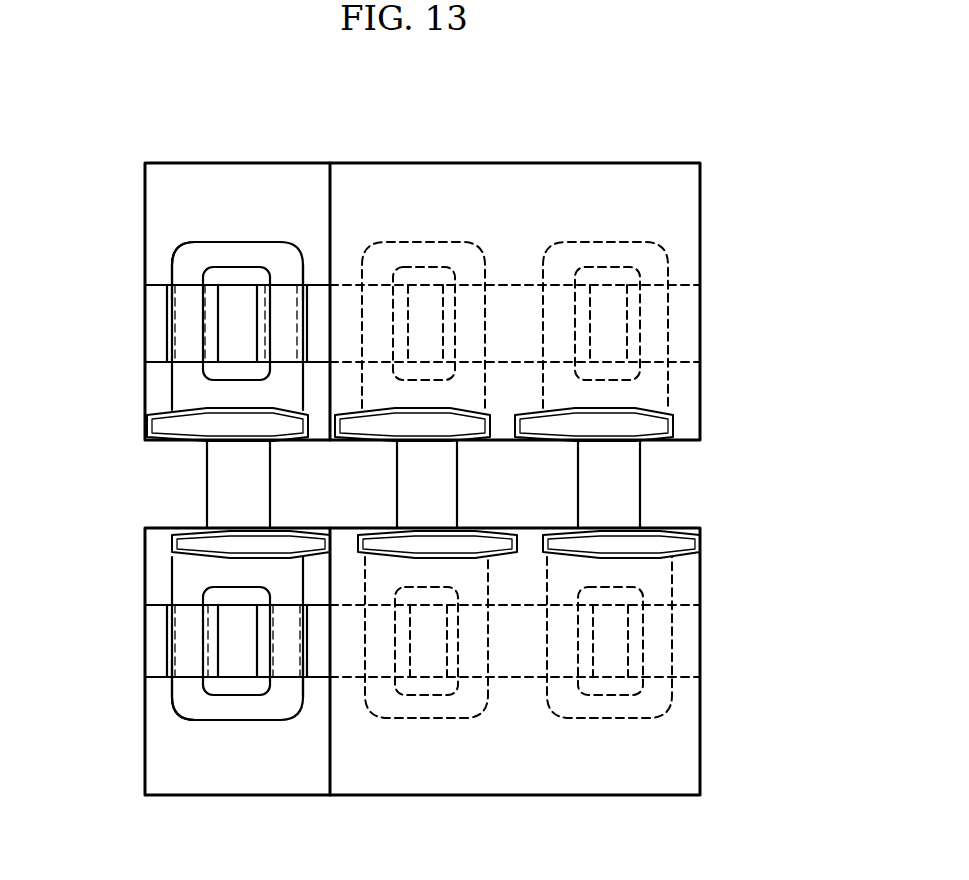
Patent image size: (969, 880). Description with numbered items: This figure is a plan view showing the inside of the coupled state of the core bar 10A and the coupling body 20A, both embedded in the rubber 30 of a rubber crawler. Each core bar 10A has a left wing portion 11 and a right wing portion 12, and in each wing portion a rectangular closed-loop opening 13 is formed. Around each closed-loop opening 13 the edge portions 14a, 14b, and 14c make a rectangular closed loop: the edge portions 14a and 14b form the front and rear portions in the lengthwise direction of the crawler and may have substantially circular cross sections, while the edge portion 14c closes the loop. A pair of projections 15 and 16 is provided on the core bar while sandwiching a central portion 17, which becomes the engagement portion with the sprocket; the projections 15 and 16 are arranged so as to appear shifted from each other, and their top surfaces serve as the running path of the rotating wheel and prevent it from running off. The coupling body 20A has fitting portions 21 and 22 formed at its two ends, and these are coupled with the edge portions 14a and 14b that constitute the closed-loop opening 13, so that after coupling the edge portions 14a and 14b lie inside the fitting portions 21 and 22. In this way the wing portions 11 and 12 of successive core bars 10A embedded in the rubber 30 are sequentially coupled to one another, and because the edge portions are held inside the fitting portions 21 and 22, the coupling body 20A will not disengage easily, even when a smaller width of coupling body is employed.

The core bar 10A is at (652, 518).
The left wing portion 11 is at (280, 257).
The right wing portion 12 is at (193, 706).
The closed-loop opening 13 is at (233, 275).
The edge portion 14a is at (183, 265).
The edge portion 14b is at (307, 318).
The edge portion 14c is at (228, 712).
The projection 15 is at (203, 423).
The projection 16 is at (198, 543).
The central portion 17 is at (260, 492).
The coupling body 20A is at (152, 310).
The fitting portion 21 is at (287, 277).
The fitting portion 22 is at (165, 320).
The rubber 30 is at (170, 772).